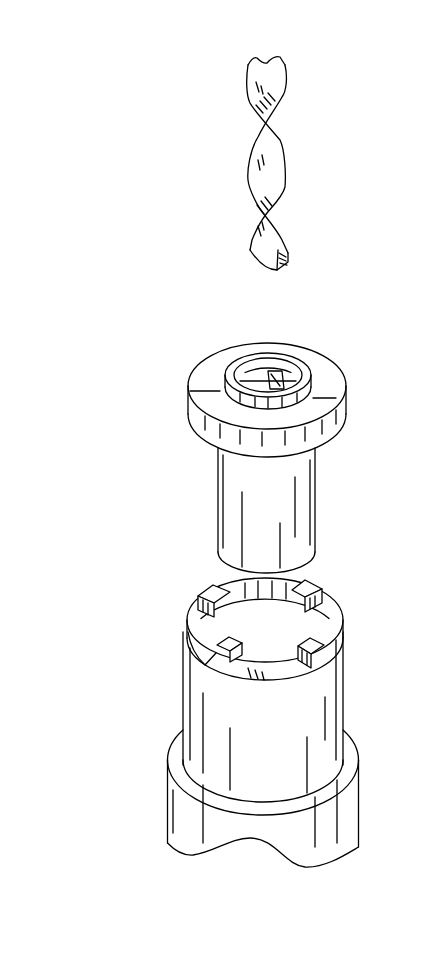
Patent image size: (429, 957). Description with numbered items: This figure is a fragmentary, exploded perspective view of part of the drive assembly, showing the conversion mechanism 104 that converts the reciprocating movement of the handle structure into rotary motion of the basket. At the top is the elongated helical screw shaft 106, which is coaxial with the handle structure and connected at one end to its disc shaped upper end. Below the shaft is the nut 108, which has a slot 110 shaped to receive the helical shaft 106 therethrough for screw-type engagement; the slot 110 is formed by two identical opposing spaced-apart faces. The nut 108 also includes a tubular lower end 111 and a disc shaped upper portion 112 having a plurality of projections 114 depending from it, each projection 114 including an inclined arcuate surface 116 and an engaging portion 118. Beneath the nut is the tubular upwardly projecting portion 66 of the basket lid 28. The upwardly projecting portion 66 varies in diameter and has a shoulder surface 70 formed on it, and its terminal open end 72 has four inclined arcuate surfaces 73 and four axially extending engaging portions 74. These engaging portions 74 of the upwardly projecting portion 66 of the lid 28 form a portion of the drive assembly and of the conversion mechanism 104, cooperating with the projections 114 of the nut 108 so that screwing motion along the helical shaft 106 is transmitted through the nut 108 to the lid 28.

The lid 28 is at (362, 835).
The upwardly projecting portion 66 is at (261, 798).
The shoulder surface 70 is at (363, 733).
The terminal open end 72 is at (267, 625).
The inclined arcuate surfaces 73 is at (198, 603).
The engaging portions 74 is at (217, 583).
The conversion mechanism 104 is at (147, 714).
The helical screw shaft 106 is at (248, 177).
The nut 108 is at (176, 514).
The slot 110 is at (263, 378).
The tubular lower end 111 is at (301, 510).
The disc shaped upper portion 112 is at (190, 421).
The projections 114 is at (350, 392).
The inclined arcuate surface 116 is at (308, 483).
The engaging portion 118 is at (335, 448).